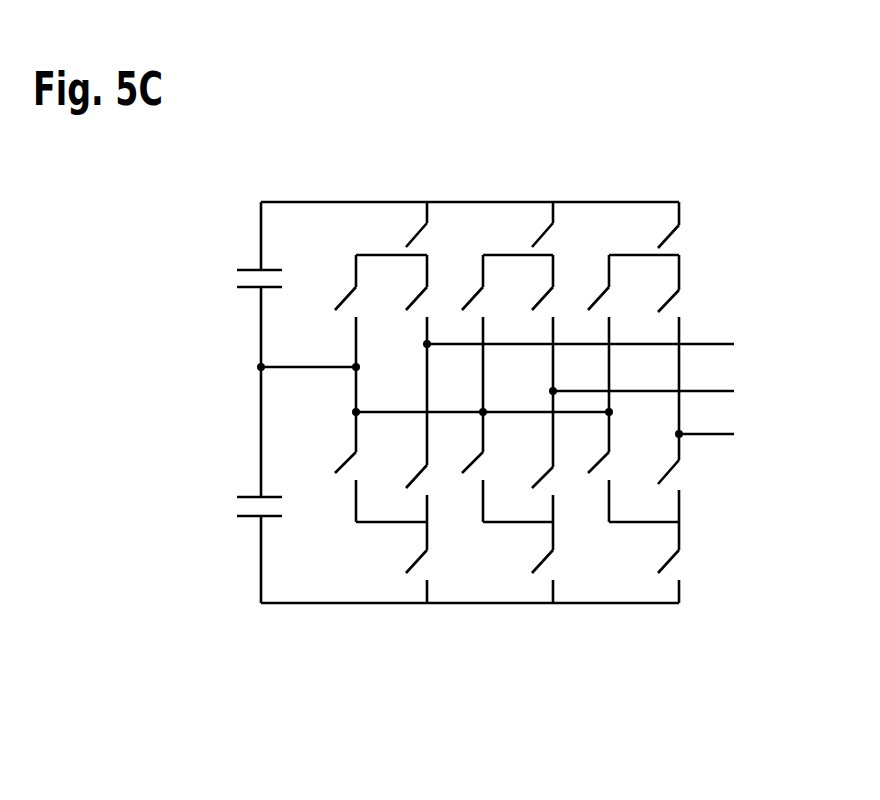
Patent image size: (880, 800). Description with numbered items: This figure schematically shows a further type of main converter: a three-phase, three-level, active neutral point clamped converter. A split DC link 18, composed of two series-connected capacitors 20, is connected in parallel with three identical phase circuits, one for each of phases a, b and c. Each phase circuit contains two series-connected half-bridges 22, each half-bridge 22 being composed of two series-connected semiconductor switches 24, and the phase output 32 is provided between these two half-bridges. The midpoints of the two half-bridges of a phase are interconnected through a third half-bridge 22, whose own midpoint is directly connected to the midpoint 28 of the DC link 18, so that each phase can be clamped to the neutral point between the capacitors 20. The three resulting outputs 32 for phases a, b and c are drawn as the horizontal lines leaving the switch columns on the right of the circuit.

The DC link 18 is at (247, 632).
The capacitor 20 is at (253, 268).
The half-bridge 22 is at (336, 405).
The semiconductor switch 24 is at (670, 238).
The midpoint of the DC link 28 is at (261, 367).
The output 32 is at (427, 344).